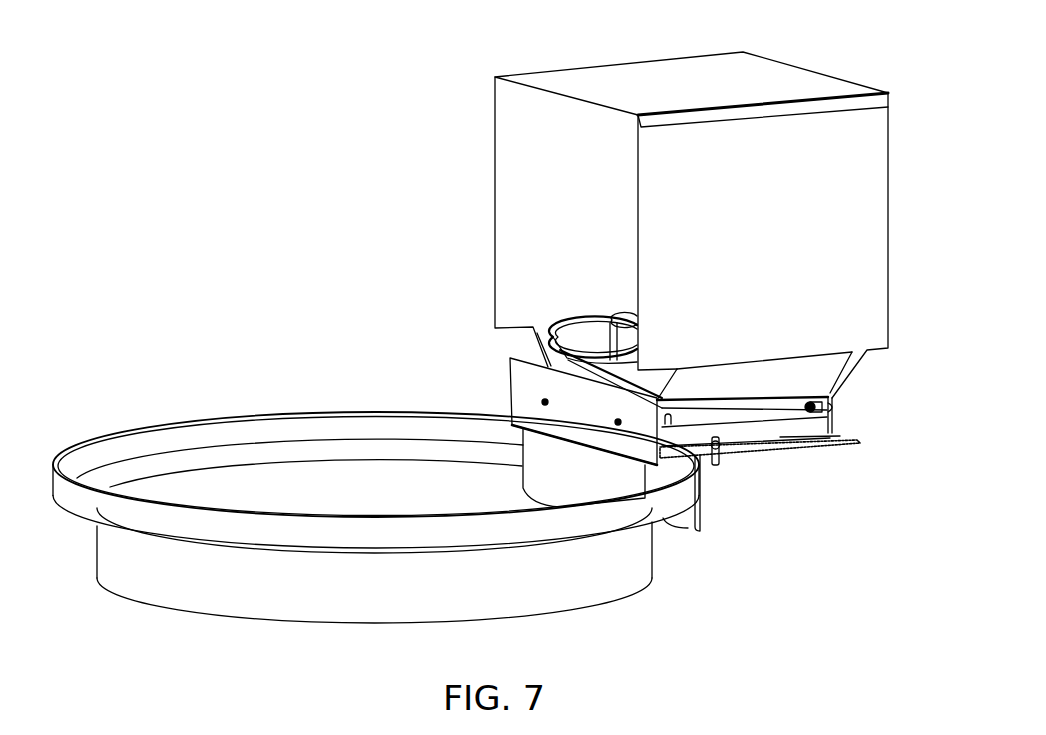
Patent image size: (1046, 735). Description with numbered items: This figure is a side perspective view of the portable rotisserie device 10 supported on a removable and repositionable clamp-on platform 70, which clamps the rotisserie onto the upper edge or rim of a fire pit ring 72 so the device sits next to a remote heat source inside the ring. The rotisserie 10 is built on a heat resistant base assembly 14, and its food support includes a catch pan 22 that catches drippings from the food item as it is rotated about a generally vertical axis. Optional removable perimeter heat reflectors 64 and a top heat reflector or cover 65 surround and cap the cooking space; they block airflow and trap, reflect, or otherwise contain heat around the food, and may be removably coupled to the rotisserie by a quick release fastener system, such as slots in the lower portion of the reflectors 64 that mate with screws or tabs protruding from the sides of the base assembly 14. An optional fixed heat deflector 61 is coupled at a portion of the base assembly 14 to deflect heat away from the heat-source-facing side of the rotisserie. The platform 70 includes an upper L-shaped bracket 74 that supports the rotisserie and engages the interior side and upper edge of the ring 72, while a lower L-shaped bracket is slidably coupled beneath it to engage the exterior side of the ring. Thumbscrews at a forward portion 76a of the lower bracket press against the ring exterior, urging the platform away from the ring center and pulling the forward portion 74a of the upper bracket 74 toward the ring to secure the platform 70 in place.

The portable rotisserie device 10 is at (375, 302).
The heat resistant base assembly 14 is at (842, 415).
The catch pan 22 is at (592, 343).
The fixed heat deflector 61 is at (510, 398).
The perimeter heat reflectors 64 is at (523, 211).
The top heat reflector 65 is at (610, 88).
The clamp-on platform 70 is at (712, 480).
The fire pit ring 72 is at (217, 438).
The upper L-shaped bracket 74 is at (780, 450).
The forward portion of the upper L-shaped bracket 74a is at (545, 476).
The forward portion of the lower bracket 76a is at (690, 517).